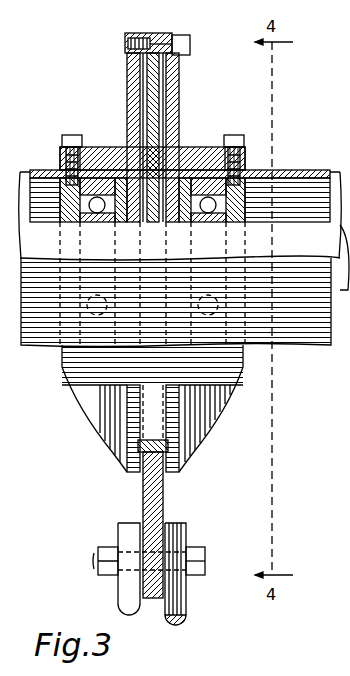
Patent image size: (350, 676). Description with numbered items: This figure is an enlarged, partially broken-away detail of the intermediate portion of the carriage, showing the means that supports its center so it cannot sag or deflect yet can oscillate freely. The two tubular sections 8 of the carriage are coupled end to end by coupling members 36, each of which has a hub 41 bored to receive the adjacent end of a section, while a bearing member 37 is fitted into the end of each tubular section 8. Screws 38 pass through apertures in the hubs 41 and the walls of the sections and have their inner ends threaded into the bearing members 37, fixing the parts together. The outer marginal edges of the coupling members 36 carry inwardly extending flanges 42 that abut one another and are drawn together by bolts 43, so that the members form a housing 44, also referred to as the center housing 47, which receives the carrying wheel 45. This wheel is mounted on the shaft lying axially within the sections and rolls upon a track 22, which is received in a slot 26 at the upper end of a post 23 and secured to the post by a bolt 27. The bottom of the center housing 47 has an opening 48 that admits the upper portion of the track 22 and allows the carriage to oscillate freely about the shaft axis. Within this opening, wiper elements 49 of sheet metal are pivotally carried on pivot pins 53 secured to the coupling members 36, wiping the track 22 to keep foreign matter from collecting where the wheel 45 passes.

The tubular section 8 is at (32, 172).
The track 22 is at (163, 515).
The post 23 is at (186, 612).
The slot 26 is at (130, 533).
The bolt 27 is at (97, 561).
The coupling member 36 is at (124, 126).
The bearing member 37 is at (57, 210).
The screw 38 is at (72, 135).
The hub 41 is at (61, 151).
The inwardly extending flange 42 is at (148, 34).
The bolt 43 is at (190, 45).
The housing 44 is at (126, 66).
The carrying wheel 45 is at (162, 105).
The center housing 47 is at (124, 38).
The opening 48 is at (137, 478).
The wiper element 49 is at (172, 477).
The pivot pin 53 is at (225, 378).